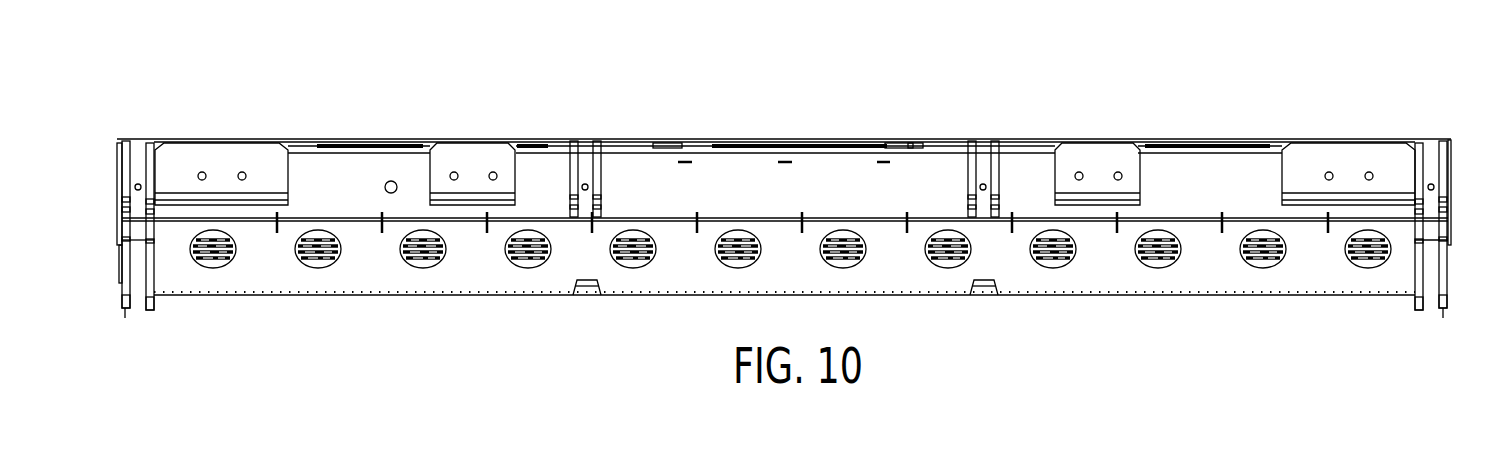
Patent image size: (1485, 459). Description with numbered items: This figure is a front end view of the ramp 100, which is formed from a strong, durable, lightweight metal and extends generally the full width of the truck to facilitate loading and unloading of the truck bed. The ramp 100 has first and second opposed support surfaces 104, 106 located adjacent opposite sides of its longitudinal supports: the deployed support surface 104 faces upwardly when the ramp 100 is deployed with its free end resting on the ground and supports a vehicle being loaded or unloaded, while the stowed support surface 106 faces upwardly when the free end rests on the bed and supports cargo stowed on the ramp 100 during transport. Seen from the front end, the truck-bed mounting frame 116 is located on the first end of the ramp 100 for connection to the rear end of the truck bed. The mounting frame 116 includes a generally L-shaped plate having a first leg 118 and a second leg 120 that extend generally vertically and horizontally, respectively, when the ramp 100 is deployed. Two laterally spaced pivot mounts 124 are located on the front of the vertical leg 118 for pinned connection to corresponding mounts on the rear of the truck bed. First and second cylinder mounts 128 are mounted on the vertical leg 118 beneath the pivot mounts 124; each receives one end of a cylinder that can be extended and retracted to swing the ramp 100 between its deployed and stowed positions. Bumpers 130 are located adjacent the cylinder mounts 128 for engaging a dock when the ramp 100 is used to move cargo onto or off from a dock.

The ramp 100 is at (1199, 60).
The first support surface 104 is at (1078, 296).
The second support surface 106 is at (813, 139).
The truck-bed mounting frame 116 is at (324, 207).
The first leg 118 is at (360, 203).
The second leg 120 is at (1220, 282).
The pivot mount 124 is at (125, 310).
The cylinder mount 128 is at (607, 170).
The bumper 130 is at (222, 160).